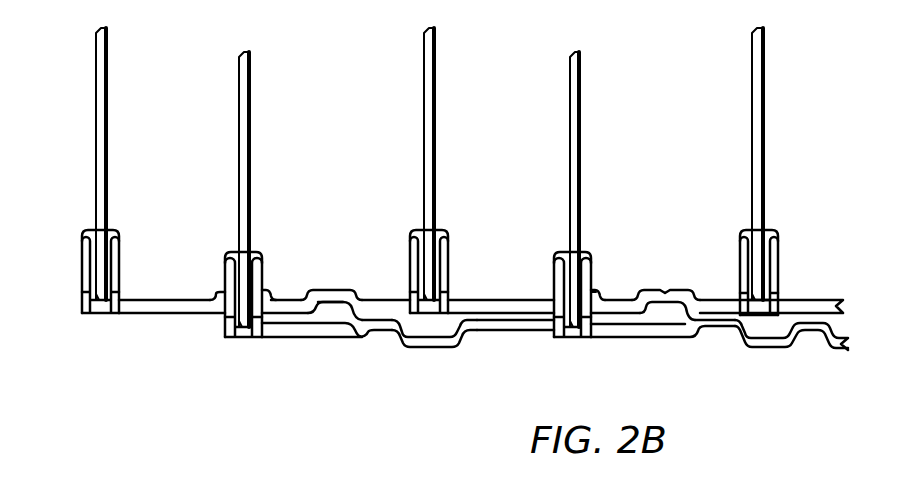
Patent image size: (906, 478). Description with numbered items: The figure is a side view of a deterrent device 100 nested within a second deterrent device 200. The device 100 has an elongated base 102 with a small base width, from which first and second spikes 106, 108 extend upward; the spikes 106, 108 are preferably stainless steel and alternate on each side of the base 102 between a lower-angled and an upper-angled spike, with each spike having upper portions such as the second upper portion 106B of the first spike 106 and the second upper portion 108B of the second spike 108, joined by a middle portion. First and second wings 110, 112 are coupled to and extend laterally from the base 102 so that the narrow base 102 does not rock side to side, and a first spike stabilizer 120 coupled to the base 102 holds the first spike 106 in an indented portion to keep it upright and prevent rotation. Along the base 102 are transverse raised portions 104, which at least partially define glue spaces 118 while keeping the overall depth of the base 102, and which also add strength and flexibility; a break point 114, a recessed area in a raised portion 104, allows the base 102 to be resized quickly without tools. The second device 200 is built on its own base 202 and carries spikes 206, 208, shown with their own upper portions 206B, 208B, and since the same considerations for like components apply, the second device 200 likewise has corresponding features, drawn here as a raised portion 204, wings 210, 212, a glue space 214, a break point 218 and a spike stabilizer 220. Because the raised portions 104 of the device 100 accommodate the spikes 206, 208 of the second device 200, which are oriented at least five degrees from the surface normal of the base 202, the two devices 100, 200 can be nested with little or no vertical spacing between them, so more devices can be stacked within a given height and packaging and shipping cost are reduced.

The deterrent device 100 is at (260, 352).
The elongated base 102 is at (290, 340).
The raised portion 104 is at (466, 332).
The first spike 106 is at (229, 93).
The second upper portion of first spike 106B is at (242, 142).
The second spike 108 is at (560, 92).
The second upper portion of second spike 108B is at (572, 142).
The first wing 110 is at (258, 279).
The second wing 112 is at (552, 292).
The break point 114 is at (713, 330).
The glue space 118 is at (485, 330).
The first spike stabilizer 120 is at (597, 274).
The second deterrent device 200 is at (107, 330).
The base of second device 202 is at (152, 316).
The raised portion of first carrier strip 204 is at (325, 305).
The spike of second device 206 is at (86, 62).
The first pin body 206B is at (98, 125).
The spike of second device 208 is at (414, 62).
The first pin body 208B is at (428, 125).
The clip to pin interface 210 is at (121, 262).
The retention clip 212 is at (402, 245).
The raised portion of first carrier strip 214 is at (331, 290).
The shoulder of carrier strip 218 is at (222, 290).
The retention clip 220 is at (82, 268).